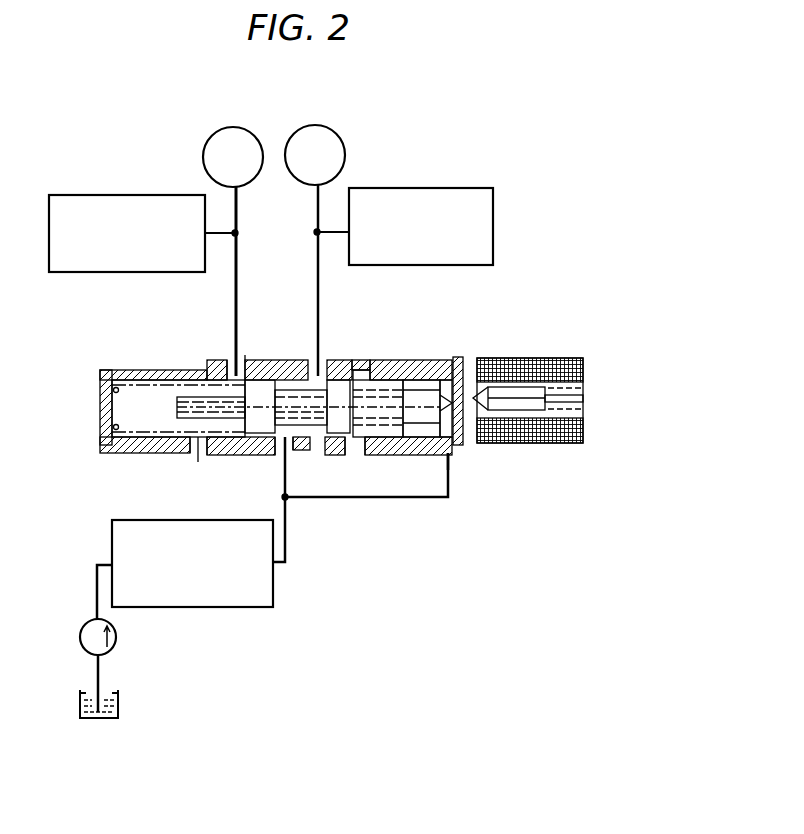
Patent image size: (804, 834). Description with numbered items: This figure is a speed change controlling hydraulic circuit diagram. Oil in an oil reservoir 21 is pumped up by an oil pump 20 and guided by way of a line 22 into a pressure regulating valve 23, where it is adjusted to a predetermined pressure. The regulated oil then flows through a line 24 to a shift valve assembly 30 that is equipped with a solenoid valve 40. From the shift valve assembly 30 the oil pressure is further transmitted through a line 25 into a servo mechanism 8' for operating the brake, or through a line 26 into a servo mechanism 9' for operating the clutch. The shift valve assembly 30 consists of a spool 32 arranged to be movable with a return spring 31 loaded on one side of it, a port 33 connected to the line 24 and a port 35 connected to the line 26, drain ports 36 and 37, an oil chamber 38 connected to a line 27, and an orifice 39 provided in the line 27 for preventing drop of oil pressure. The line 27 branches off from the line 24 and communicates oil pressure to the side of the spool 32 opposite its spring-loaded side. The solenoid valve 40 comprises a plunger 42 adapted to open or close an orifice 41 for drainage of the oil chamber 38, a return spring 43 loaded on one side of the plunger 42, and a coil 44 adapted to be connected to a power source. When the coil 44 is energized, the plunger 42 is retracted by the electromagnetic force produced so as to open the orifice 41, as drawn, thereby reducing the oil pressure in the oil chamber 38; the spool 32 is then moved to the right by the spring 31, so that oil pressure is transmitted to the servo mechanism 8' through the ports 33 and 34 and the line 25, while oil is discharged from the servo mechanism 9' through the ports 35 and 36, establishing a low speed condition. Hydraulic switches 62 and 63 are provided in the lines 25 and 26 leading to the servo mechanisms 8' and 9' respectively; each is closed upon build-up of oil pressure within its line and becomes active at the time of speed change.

The servo mechanism 8' is at (369, 145).
The servo mechanism 9' is at (284, 135).
The oil pump 20 is at (79, 641).
The oil reservoir 21 is at (119, 705).
The line 22 is at (106, 562).
The pressure regulating valve 23 is at (222, 607).
The line 24 is at (287, 547).
The line 25 is at (320, 298).
The line 26 is at (238, 297).
The line 27 is at (365, 498).
The shift valve assembly 30 is at (397, 358).
The return spring 31 is at (123, 392).
The spool 32 is at (290, 385).
The port 33 is at (278, 463).
The port 34 is at (322, 362).
The port 35 is at (230, 360).
The drain port 36 is at (202, 455).
The drain port 37 is at (348, 443).
The oil chamber 38 is at (443, 363).
The orifice 39 is at (460, 462).
The solenoid valve 40 is at (590, 424).
The orifice 41 is at (465, 397).
The plunger 42 is at (528, 415).
The return spring 43 is at (583, 383).
The coil 44 is at (547, 358).
The hydraulic switch 62 is at (403, 188).
The hydraulic switch 63 is at (147, 195).